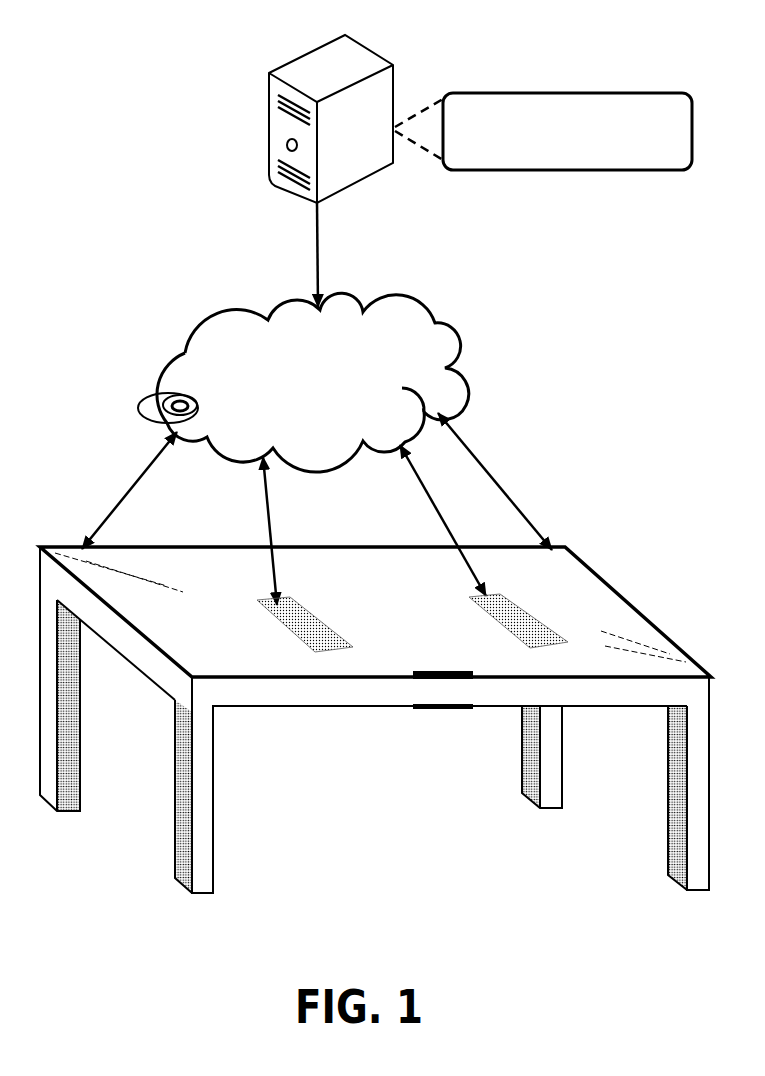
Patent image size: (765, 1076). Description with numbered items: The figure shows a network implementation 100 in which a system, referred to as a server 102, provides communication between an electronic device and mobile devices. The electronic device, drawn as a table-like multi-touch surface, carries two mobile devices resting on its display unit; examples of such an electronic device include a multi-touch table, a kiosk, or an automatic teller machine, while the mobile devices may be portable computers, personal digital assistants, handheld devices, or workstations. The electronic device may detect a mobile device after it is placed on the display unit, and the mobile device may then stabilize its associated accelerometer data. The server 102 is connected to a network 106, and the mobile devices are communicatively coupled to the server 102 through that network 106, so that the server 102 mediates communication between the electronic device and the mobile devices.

The network implementation 100 is at (90, 117).
The server 102 is at (631, 150).
The network 106 is at (286, 428).